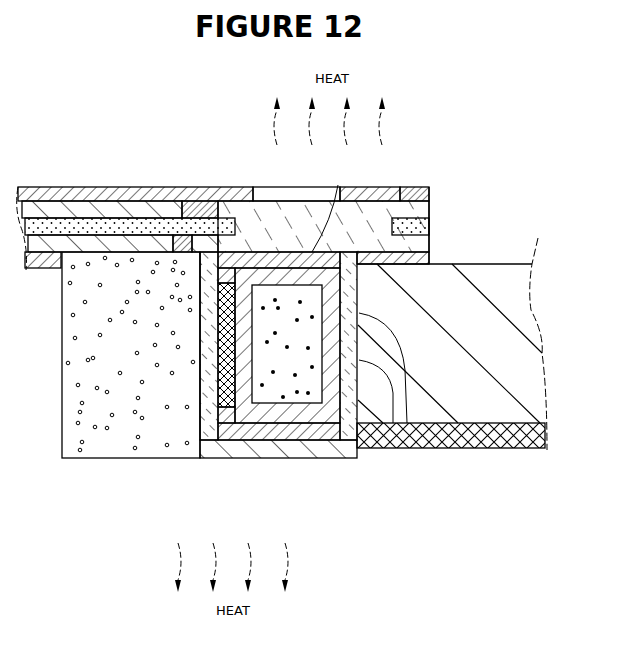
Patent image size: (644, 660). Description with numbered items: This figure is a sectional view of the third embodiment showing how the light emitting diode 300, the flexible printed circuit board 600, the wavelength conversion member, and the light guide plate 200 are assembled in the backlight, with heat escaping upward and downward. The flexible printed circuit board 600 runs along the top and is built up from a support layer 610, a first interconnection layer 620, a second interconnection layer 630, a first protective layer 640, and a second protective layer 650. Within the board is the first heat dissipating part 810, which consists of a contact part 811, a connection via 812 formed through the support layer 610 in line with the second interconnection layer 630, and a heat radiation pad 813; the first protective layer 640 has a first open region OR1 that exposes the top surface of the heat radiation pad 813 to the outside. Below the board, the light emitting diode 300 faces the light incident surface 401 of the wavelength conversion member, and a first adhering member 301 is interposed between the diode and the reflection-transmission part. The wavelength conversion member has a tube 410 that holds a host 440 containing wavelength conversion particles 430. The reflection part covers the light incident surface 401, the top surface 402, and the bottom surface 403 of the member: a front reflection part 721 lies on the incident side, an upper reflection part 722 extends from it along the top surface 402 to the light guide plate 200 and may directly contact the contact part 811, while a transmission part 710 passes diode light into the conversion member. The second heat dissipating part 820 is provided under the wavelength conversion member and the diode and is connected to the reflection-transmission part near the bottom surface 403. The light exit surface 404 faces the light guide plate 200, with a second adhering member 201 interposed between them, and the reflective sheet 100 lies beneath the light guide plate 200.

The flexible printed circuit board 600 is at (22, 131).
The second protective layer 650 is at (24, 196).
The first protective layer 640 is at (50, 212).
The second interconnection layer 630 is at (192, 208).
The first interconnection layer 620 is at (100, 227).
The support layer 610 is at (150, 245).
The top surface 402 is at (275, 252).
The upper reflection part 722 is at (338, 185).
The first open region OR1 is at (393, 196).
The heat radiation pad 813 is at (431, 197).
The connection via 812 is at (395, 227).
The contact part 811 is at (390, 248).
The first heat dissipating part 810 is at (428, 225).
The front reflection part 721 is at (222, 276).
The transmission part 710 is at (226, 324).
The first adhering member 301 is at (208, 352).
The light emitting diode 300 is at (113, 415).
The light incident surface 401 is at (212, 445).
The wavelength conversion particles 430 is at (275, 445).
The tube 410 is at (283, 442).
The bottom surface 403 is at (281, 460).
The second heat dissipating part 820 is at (330, 446).
The host 440 is at (356, 452).
The second adhering member 201 is at (393, 423).
The light guide plate 200 is at (447, 425).
The reflective sheet 100 is at (478, 415).
The light exit surface 404 is at (407, 423).